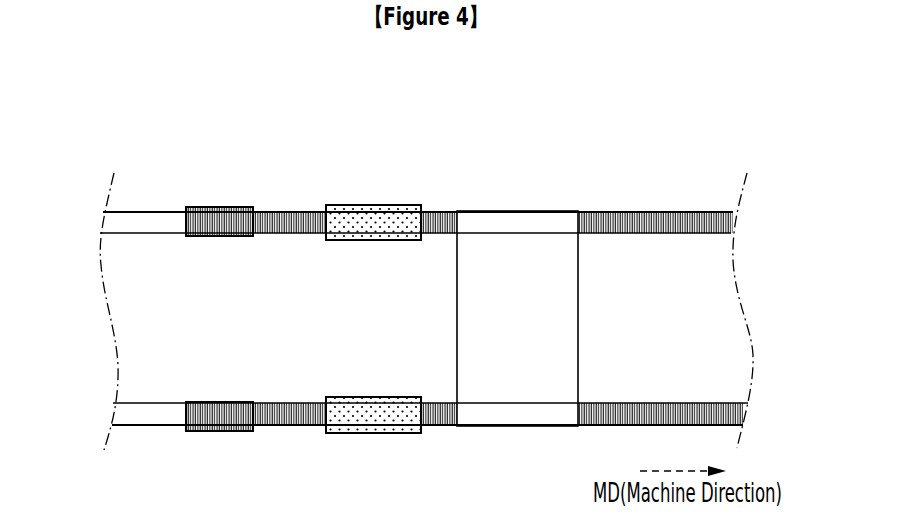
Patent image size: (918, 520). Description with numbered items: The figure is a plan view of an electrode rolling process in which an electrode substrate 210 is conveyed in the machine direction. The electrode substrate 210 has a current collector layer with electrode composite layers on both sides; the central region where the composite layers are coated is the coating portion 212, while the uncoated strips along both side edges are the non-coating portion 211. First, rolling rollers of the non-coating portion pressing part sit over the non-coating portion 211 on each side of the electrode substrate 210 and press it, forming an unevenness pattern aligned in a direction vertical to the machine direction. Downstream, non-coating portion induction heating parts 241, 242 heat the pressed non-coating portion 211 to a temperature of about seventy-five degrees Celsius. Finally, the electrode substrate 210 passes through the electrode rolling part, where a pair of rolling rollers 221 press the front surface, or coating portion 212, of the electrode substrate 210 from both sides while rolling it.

The electrode substrate 210 is at (170, 107).
The non-coating portion 211 is at (157, 223).
The coating portion 212 is at (129, 283).
The non-coating portion induction heating part 241 is at (378, 208).
The non-coating portion induction heating part 242 is at (378, 428).
The rolling rollers 221 is at (502, 404).